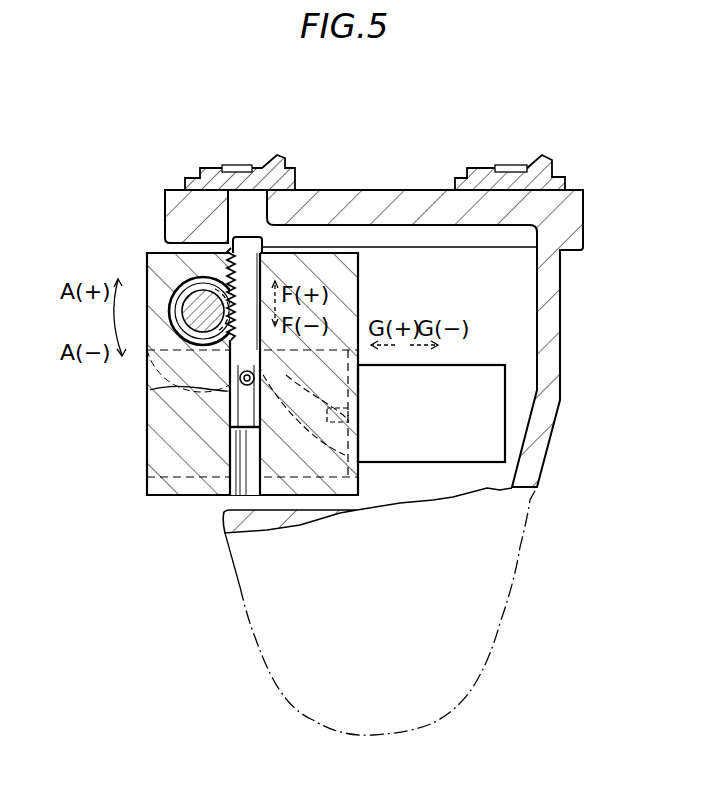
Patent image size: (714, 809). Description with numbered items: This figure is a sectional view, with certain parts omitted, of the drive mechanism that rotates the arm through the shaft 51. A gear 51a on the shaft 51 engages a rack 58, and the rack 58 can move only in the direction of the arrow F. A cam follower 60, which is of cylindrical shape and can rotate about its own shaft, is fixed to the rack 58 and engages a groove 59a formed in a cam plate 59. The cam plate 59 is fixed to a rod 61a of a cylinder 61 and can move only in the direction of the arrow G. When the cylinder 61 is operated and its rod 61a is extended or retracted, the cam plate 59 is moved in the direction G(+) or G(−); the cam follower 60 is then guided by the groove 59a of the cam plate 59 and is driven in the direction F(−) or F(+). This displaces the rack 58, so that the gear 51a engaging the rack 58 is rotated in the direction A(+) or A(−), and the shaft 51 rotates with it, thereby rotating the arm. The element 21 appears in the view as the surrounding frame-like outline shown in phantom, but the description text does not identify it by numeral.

The lens frame 21 is at (288, 700).
The shaft 51 is at (150, 263).
The gear 51a is at (168, 253).
The rack 58 is at (247, 243).
The cam plate 59 is at (357, 492).
The groove 59a is at (300, 395).
The cam follower 60 is at (150, 390).
The cylinder 61 is at (492, 443).
The rod 61a is at (350, 426).